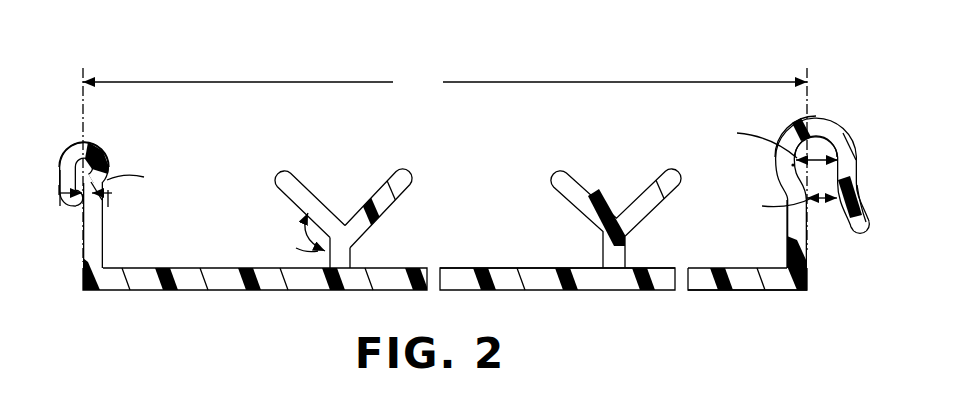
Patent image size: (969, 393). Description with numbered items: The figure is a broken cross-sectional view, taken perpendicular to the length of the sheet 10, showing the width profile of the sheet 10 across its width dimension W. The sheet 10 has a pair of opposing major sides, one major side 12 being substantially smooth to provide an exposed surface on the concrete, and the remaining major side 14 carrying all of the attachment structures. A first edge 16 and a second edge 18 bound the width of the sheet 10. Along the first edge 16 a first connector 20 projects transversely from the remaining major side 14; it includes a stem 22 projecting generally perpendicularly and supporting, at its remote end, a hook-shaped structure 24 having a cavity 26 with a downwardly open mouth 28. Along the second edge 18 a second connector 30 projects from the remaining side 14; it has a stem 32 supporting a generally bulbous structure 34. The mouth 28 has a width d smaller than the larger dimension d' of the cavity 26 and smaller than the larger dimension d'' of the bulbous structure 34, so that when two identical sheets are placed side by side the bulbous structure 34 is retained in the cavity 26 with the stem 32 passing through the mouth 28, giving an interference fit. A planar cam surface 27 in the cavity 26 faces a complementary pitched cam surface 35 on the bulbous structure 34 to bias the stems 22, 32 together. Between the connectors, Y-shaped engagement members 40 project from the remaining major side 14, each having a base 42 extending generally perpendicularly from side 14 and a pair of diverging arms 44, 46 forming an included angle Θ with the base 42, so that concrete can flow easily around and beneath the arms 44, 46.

The sheet 10 is at (450, 175).
The major side 12 is at (446, 279).
The remaining major side 14 is at (504, 267).
The first edge 16 is at (808, 289).
The second edge 18 is at (82, 262).
The first connector 20 is at (824, 111).
The stem 22 is at (787, 234).
The hook-shaped structure 24 is at (792, 140).
The cavity 26 is at (815, 141).
The cam surface 27 is at (792, 166).
The open mouth 28 is at (824, 216).
The second connector 30 is at (109, 146).
The stem 32 is at (103, 198).
The bulbous structure 34 is at (72, 139).
The complementary cam surface 35 is at (71, 207).
The Y-shaped engagement member 40 is at (465, 199).
The base 42 is at (352, 256).
The arm 44 is at (288, 174).
The arm 46 is at (399, 176).